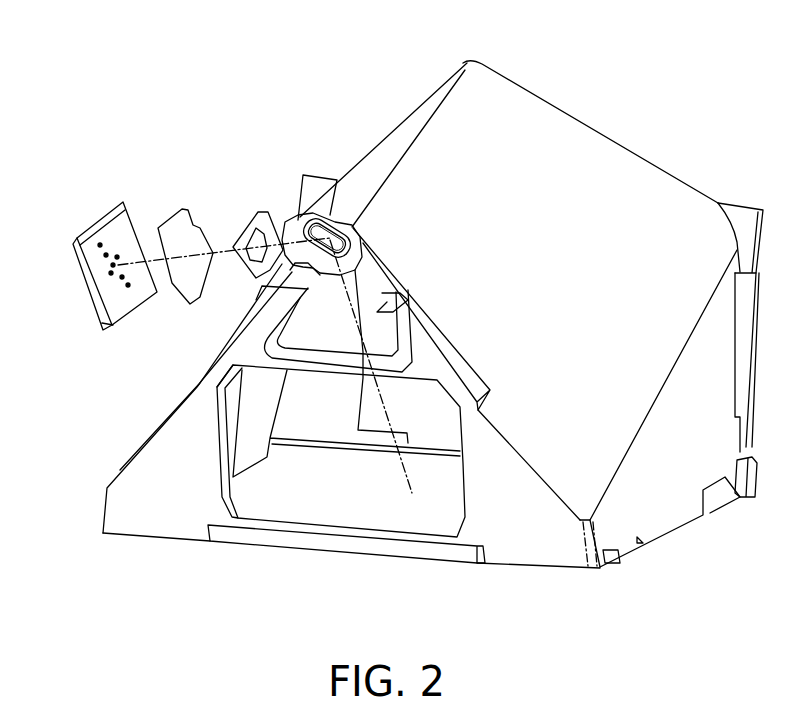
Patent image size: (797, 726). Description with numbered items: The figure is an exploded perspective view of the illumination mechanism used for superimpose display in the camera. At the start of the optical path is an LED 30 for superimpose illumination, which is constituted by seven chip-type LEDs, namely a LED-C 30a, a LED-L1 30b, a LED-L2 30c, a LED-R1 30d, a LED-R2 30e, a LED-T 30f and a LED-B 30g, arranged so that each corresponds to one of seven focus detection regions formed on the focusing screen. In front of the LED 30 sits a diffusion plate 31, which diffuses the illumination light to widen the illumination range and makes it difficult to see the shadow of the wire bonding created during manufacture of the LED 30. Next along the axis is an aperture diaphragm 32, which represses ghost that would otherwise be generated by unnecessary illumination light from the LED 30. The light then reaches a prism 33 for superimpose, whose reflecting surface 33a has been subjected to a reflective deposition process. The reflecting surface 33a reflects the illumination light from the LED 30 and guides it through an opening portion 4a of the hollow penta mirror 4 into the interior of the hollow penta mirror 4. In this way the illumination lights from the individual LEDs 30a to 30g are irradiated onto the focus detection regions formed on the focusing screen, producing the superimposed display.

The hollow penta mirror 4 is at (520, 100).
The opening portion 4a is at (365, 285).
The LED for superimpose illumination 30 is at (125, 202).
The LED-C 30a is at (113, 265).
The LED-L1 30b is at (106, 253).
The LED-L2 30c is at (100, 245).
The LED-R1 30d is at (122, 277).
The LED-R2 30e is at (128, 285).
The LED-T 30f is at (111, 273).
The LED-B 30g is at (117, 257).
The diffusion plate 31 is at (190, 228).
The aperture diaphragm 32 is at (240, 270).
The prism for superimpose 33 is at (356, 258).
The reflecting surface 33a is at (331, 222).